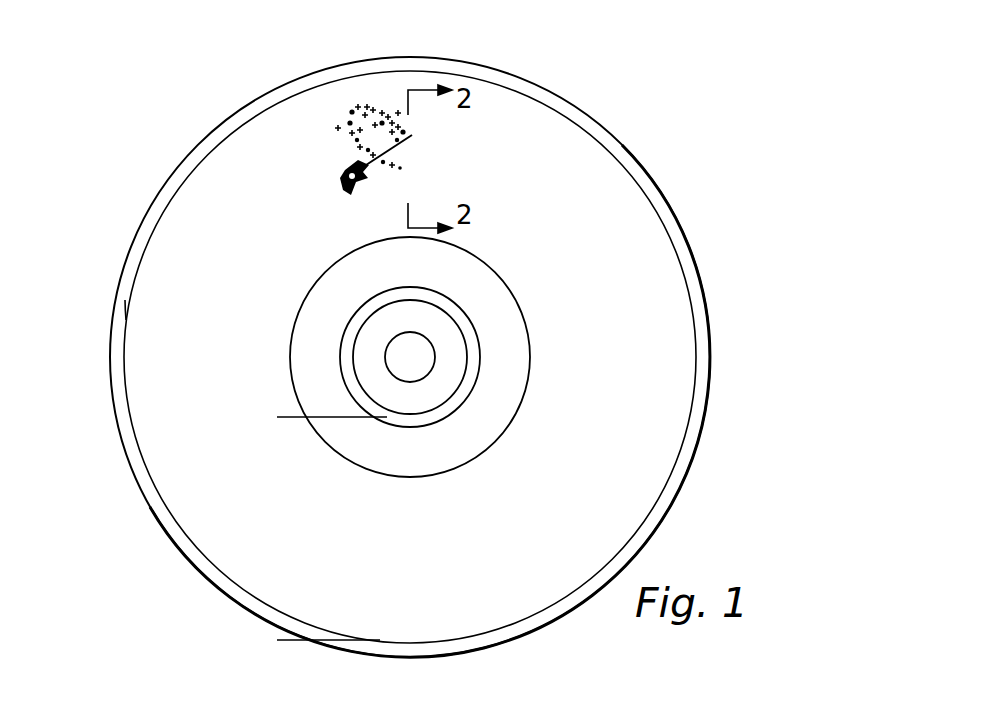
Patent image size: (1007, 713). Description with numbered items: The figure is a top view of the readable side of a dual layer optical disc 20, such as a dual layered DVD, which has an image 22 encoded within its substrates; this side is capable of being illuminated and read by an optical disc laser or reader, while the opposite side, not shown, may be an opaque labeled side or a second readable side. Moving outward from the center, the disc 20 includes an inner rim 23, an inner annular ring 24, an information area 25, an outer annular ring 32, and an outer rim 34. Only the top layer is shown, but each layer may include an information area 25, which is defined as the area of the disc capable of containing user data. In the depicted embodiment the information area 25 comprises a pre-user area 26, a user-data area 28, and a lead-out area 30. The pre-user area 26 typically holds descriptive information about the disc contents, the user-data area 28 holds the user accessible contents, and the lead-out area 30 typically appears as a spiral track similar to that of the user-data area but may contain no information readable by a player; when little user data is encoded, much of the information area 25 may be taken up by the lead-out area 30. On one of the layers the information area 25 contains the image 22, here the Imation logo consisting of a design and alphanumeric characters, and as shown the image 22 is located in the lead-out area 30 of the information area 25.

The dual layer optical disc 20 is at (578, 80).
The image 22 is at (342, 162).
The inner rim 23 is at (392, 343).
The inner annular ring 24 is at (438, 317).
The information area 25 is at (265, 418).
The pre-user area 26 is at (473, 352).
The user-data area 28 is at (515, 367).
The lead-out area 30 is at (673, 297).
The outer annular ring 32 is at (690, 447).
The outer rim 34 is at (120, 312).